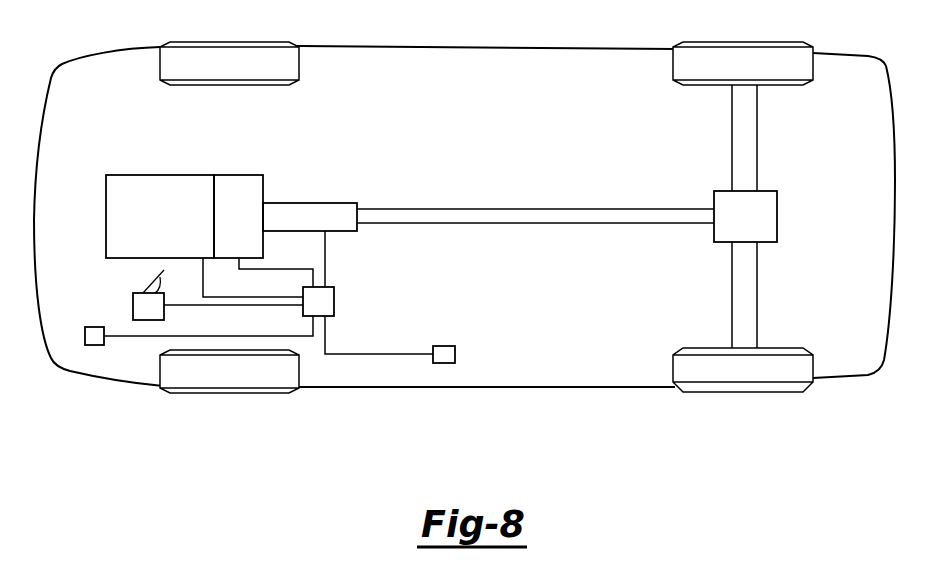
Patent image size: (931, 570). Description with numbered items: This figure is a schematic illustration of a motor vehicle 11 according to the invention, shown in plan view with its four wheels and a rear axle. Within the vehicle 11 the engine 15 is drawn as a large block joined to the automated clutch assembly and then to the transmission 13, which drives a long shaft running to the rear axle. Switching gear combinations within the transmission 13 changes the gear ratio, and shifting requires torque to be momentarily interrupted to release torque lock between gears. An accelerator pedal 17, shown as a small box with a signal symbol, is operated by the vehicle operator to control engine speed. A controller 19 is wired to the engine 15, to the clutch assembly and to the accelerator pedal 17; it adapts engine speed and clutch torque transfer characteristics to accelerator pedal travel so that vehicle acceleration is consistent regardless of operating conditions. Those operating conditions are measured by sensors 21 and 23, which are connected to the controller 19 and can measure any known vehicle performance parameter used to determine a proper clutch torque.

The vehicle 11 is at (573, 62).
The engine 15 is at (178, 175).
The transmission 13 is at (308, 203).
The accelerator pedal 17 is at (133, 305).
The controller 19 is at (334, 303).
The sensor 21 is at (85, 336).
The sensor 23 is at (455, 355).